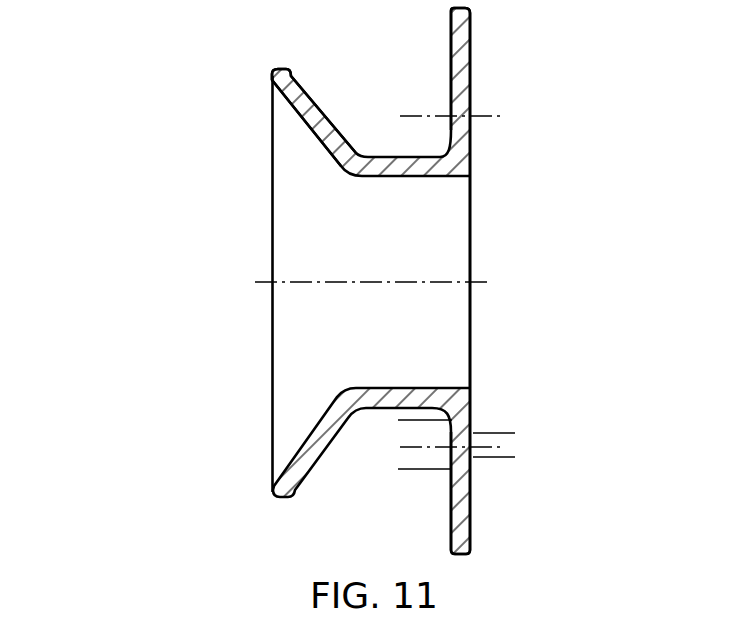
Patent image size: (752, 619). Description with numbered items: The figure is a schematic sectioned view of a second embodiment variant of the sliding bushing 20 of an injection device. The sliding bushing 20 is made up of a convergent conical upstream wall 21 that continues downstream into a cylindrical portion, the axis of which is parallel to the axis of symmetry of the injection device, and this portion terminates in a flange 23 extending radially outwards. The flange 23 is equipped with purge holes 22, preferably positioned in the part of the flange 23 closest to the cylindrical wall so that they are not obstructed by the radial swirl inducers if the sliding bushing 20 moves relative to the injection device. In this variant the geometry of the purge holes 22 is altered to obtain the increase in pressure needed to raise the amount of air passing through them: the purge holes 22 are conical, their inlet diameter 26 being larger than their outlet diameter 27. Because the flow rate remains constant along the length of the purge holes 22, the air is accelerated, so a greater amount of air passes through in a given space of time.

The sliding bushing 20 is at (168, 258).
The convergent conical upstream wall 21 is at (297, 86).
The purge holes 22 is at (473, 115).
The flange 23 is at (468, 48).
The inlet diameter 26 is at (426, 460).
The outlet diameter 27 is at (498, 456).